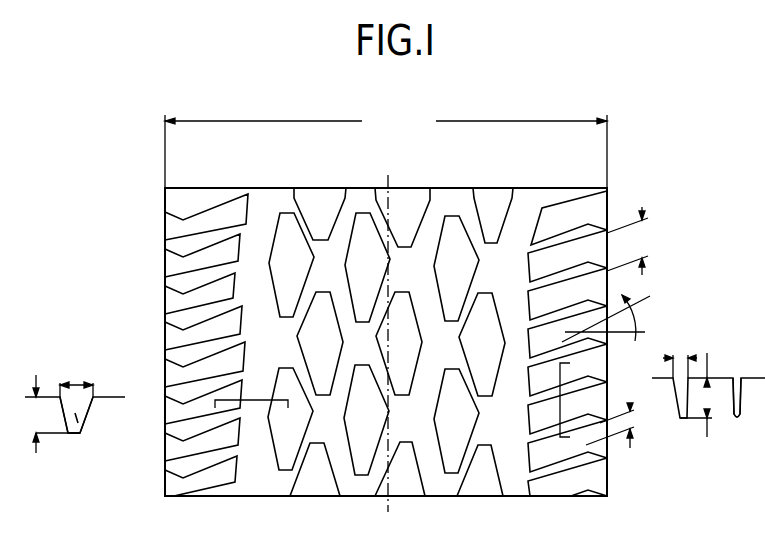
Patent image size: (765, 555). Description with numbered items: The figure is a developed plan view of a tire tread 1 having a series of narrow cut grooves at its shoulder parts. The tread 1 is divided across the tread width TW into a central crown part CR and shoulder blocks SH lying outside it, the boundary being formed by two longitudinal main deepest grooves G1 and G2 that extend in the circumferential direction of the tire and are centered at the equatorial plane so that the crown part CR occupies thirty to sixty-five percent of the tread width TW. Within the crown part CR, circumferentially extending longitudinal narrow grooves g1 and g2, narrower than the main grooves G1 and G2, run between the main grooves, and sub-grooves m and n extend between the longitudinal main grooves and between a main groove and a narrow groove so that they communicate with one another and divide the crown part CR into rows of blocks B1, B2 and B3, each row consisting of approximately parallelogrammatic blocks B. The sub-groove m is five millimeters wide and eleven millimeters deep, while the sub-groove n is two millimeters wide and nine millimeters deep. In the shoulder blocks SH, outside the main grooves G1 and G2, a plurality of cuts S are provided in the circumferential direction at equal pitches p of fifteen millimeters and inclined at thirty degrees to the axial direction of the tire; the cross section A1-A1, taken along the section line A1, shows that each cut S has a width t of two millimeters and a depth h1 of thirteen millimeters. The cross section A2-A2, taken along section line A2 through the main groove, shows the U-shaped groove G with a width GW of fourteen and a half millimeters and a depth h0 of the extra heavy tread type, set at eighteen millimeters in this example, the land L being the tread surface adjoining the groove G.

The tread 1 is at (621, 208).
The tread width TW is at (386, 149).
The shoulder blocks SH is at (242, 499).
The crown part CR is at (520, 499).
The blocks B is at (385, 326).
The row of blocks B1 is at (425, 184).
The row of blocks B2 is at (332, 184).
The row of blocks B3 is at (518, 184).
The longitudinal main groove G1 is at (531, 205).
The longitudinal main groove G2 is at (262, 207).
The longitudinal narrow groove g1 is at (348, 200).
The longitudinal narrow groove g2 is at (438, 200).
The pitch of cuts p is at (628, 241).
The section line A1 is at (573, 404).
The cross section A1-A1 is at (675, 392).
The width of cut t is at (641, 390).
The depth of cut h1 is at (705, 395).
The cut S is at (682, 421).
The sub-groove m is at (378, 471).
The sub-groove n is at (473, 448).
The section line A2 is at (251, 414).
The cross section A2-A2 is at (85, 403).
The width of groove GW is at (77, 379).
The land portion L is at (108, 396).
The depth of longitudinal main grooves h0 is at (56, 414).
The groove G is at (80, 434).